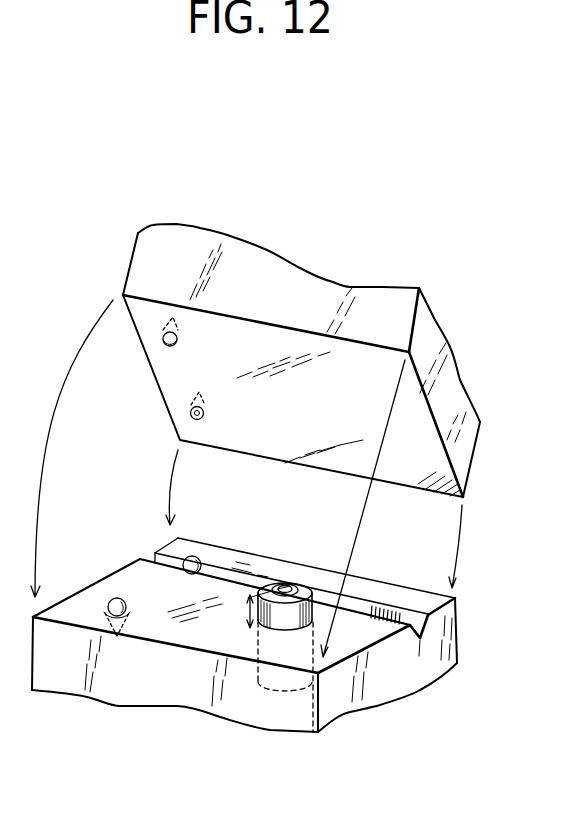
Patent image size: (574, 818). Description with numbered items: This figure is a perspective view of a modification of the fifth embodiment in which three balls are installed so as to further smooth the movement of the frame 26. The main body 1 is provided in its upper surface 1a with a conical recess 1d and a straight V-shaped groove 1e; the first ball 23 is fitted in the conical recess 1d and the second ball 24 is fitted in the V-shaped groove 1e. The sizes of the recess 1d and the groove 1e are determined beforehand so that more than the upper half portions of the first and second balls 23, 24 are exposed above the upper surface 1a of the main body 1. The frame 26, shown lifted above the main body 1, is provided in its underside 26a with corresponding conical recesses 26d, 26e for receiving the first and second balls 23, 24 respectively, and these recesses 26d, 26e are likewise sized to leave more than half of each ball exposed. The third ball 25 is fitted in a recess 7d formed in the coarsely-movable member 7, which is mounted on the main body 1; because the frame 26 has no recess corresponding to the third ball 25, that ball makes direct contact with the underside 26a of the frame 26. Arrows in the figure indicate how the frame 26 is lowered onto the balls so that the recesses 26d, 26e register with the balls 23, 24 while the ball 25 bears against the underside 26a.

The main body 1 is at (458, 622).
The upper surface of the main body 1a is at (343, 635).
The conical recess 1d is at (130, 608).
The straight V-shaped groove 1e is at (153, 558).
The coarsely-movable member 7 is at (283, 637).
The recess 7d is at (285, 583).
The first ball 23 is at (112, 598).
The second ball 24 is at (200, 557).
The third ball 25 is at (298, 582).
The frame 26 is at (450, 347).
The underside of the frame 26a is at (418, 447).
The conical recess 26d is at (162, 348).
The conical recess 26e is at (190, 414).